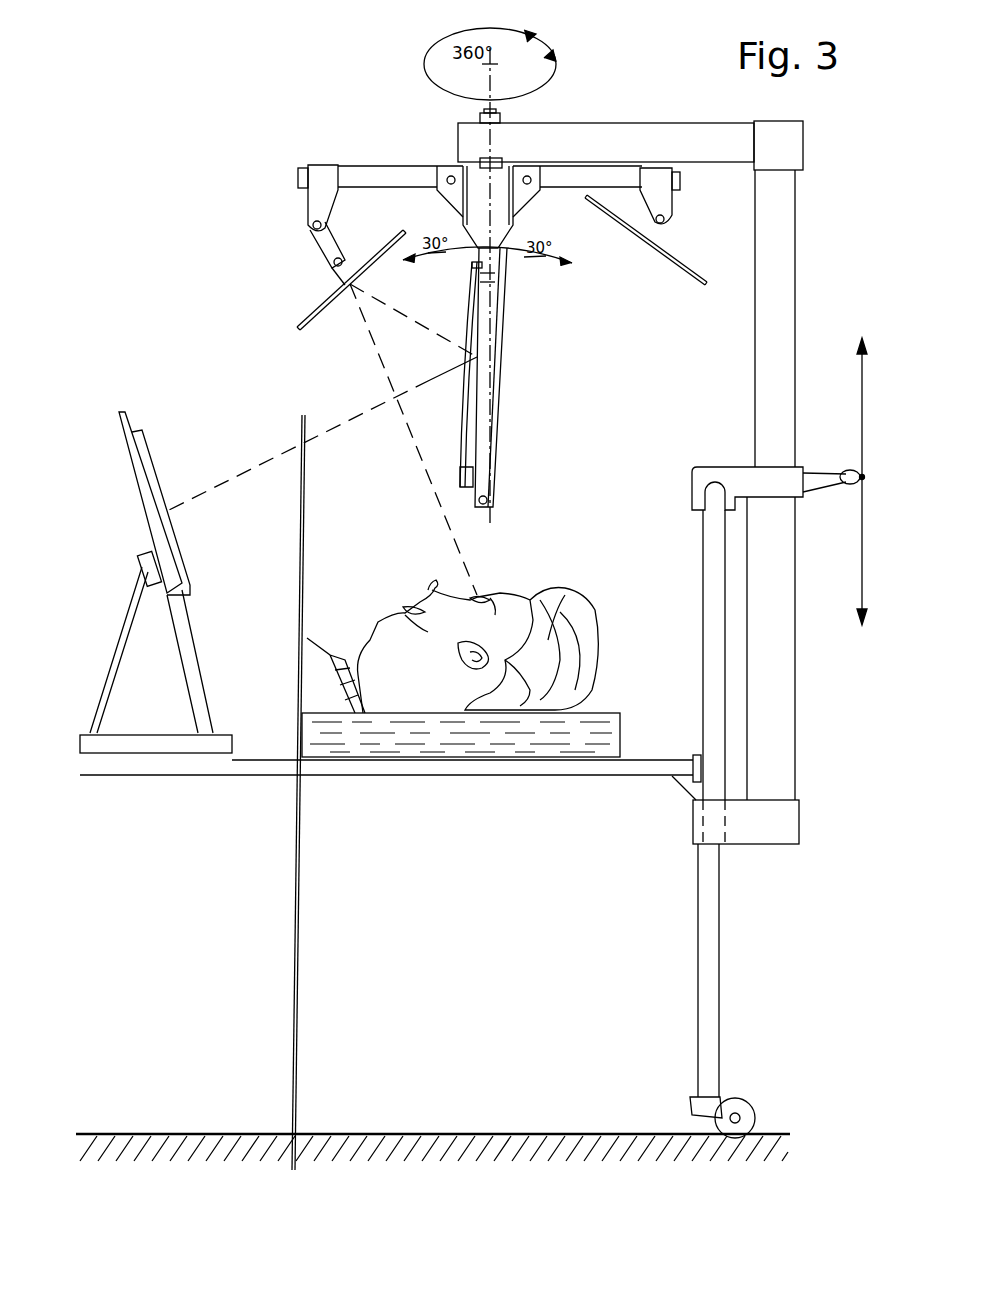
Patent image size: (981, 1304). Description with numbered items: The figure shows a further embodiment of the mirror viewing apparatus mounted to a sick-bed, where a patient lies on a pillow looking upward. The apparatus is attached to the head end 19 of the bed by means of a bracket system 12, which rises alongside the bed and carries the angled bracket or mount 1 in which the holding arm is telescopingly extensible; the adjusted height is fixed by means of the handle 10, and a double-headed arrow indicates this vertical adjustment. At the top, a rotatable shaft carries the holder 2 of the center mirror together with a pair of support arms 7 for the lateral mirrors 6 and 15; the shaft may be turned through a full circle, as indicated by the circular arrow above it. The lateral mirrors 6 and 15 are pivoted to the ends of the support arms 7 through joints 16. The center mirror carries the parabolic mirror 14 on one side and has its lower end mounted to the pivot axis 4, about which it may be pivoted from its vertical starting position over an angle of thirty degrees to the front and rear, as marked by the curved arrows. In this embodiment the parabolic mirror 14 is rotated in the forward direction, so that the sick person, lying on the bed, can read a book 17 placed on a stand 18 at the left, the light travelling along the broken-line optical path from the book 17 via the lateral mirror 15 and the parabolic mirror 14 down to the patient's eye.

The angled bracket or mount 1 is at (765, 342).
The holder 2 is at (500, 178).
The pivot axis 4 is at (478, 163).
The lateral mirror 6 is at (655, 238).
The support arm 7 is at (612, 178).
The handle 10 is at (810, 480).
The bracket system 12 is at (782, 692).
The parabolic mirror 14 is at (470, 323).
The lateral mirror 15 is at (376, 247).
The joint 16 is at (322, 168).
The book 17 is at (148, 480).
The stand 18 is at (185, 622).
The head end 19 is at (710, 983).